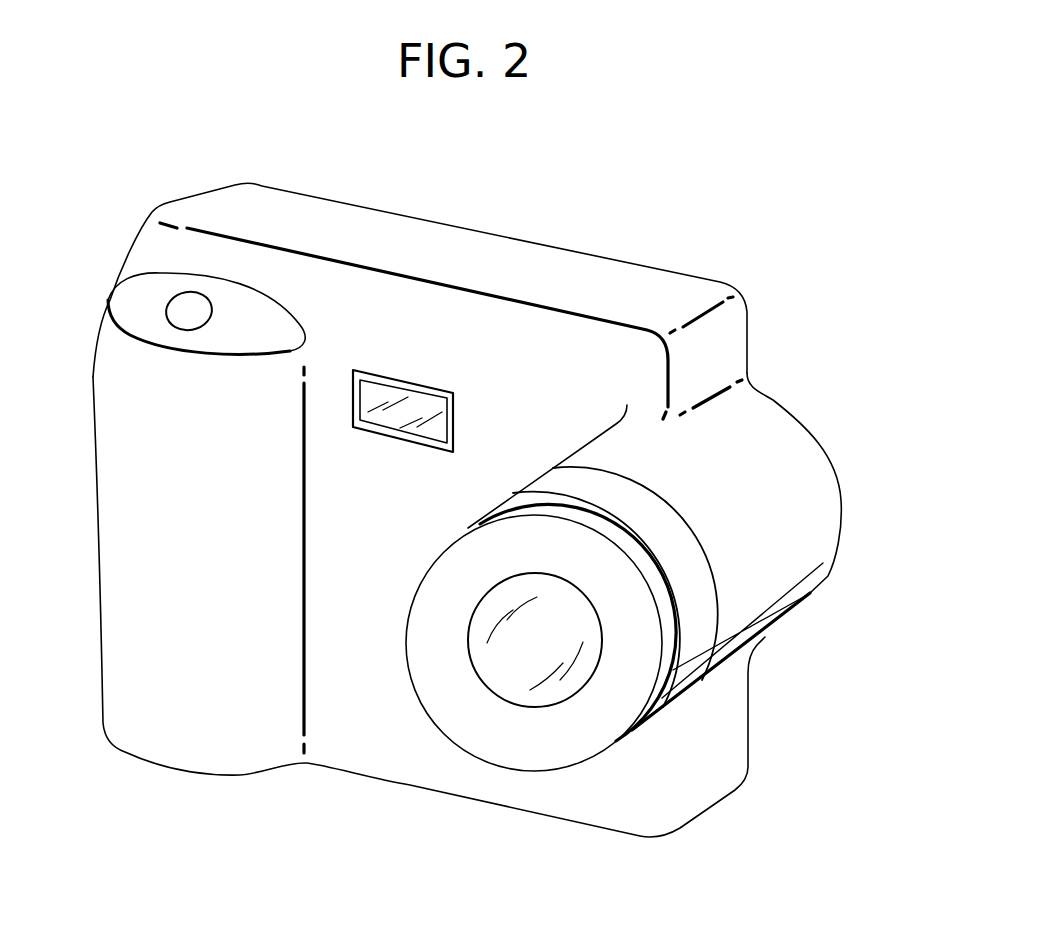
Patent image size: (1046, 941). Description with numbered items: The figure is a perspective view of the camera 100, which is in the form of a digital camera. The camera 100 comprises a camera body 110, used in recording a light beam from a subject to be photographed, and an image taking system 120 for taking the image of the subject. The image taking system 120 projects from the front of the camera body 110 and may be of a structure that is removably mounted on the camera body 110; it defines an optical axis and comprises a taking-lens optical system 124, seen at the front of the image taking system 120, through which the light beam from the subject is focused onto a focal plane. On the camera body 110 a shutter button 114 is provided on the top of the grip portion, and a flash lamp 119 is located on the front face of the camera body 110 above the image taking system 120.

The camera 100 is at (682, 218).
The camera body 110 is at (542, 242).
The shutter button 114 is at (190, 310).
The flash lamp 119 is at (415, 407).
The image taking system 120 is at (687, 695).
The taking-lens optical system 124 is at (513, 658).